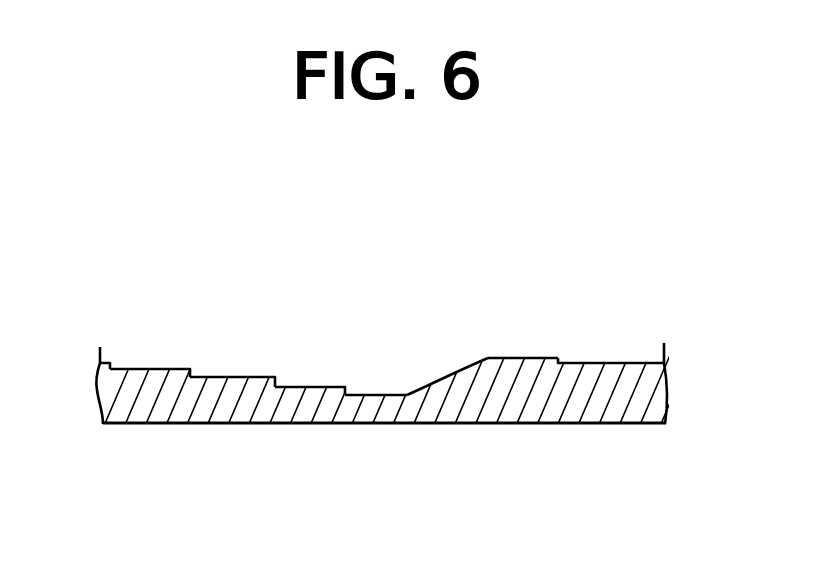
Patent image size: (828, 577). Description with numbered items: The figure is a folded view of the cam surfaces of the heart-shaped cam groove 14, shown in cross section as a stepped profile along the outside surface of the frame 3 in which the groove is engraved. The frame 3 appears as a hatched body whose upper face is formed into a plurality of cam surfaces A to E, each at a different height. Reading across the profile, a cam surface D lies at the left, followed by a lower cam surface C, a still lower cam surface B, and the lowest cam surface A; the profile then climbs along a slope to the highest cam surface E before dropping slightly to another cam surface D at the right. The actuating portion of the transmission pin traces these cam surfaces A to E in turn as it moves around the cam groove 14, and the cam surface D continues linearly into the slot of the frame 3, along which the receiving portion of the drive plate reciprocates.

The frame 3 is at (255, 412).
The heart-shaped cam groove 14 is at (457, 368).
The cam surface A is at (376, 375).
The cam surface B is at (310, 370).
The cam surface C is at (232, 363).
The cam surface D is at (387, 349).
The cam surface E is at (523, 336).